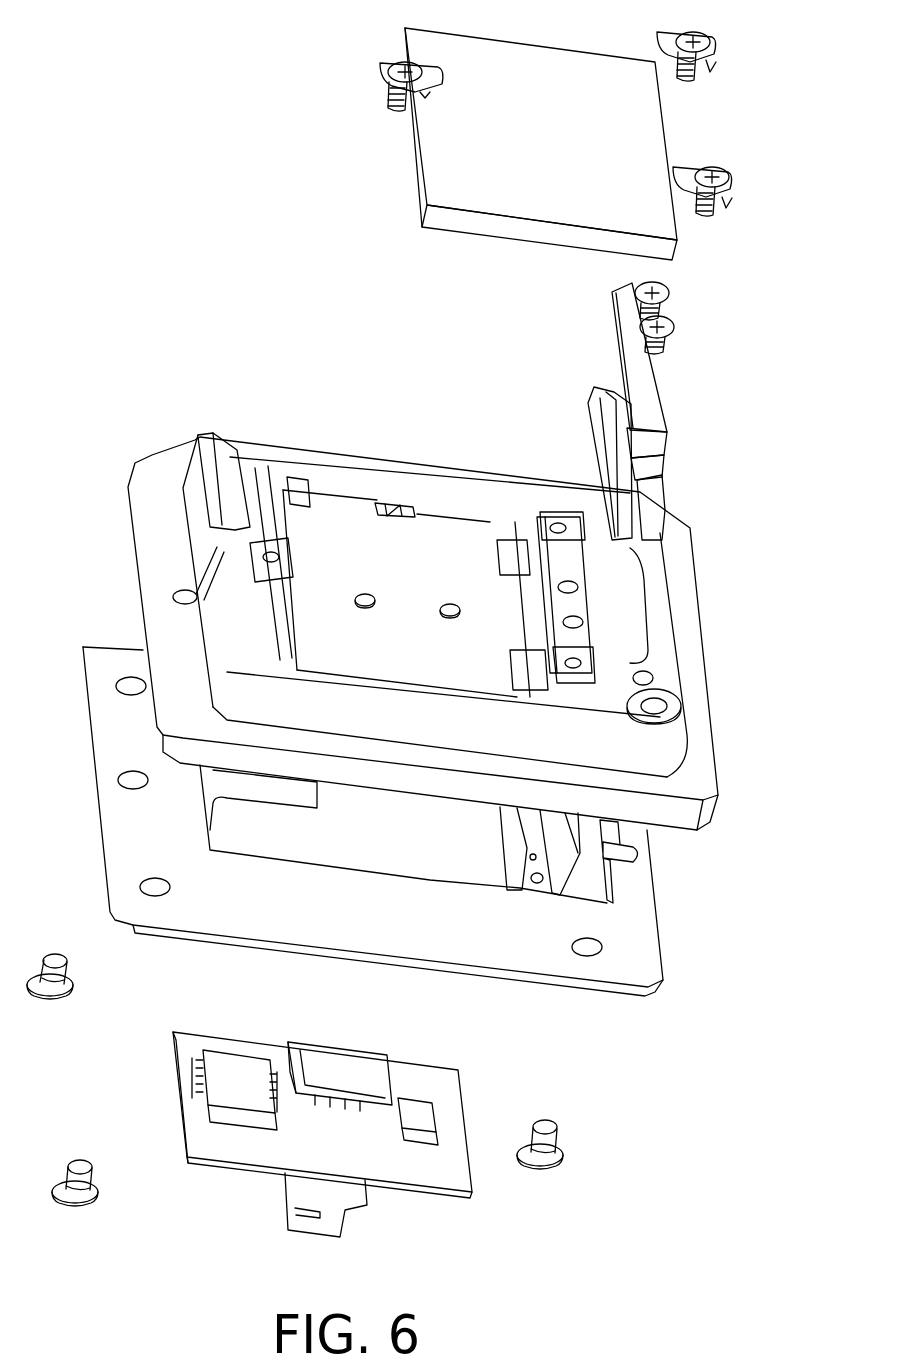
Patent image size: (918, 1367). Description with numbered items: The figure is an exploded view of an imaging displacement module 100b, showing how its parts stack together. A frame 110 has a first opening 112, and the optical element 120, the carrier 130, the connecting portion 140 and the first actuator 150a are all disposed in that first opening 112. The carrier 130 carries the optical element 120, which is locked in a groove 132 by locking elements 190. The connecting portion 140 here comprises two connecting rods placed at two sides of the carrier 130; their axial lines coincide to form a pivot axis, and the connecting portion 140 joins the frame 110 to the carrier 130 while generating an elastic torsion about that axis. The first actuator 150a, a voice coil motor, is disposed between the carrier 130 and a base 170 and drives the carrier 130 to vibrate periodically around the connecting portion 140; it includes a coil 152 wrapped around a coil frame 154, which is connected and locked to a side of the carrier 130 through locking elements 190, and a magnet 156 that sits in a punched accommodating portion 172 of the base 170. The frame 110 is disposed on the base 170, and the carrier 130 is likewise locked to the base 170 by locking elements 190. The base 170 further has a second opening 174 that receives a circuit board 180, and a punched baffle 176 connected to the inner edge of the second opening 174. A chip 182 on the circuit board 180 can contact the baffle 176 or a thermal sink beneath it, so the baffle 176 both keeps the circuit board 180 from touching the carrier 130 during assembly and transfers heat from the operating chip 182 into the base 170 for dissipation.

The imaging displacement module 100b is at (792, 1275).
The frame 110 is at (423, 625).
The first opening 112 is at (248, 510).
The optical element 120 is at (455, 165).
The carrier 130 is at (548, 510).
The groove 132 is at (455, 545).
The connecting portion 140 is at (398, 500).
The first actuator 150a is at (717, 411).
The coil 152 is at (640, 487).
The coil frame 154 is at (668, 437).
The magnet 156 is at (674, 463).
The base 170 is at (630, 958).
The accommodating portion 172 is at (556, 900).
The second opening 174 is at (420, 852).
The baffle 176 is at (277, 802).
The circuit board 180 is at (322, 1146).
The chip 182 is at (237, 1117).
The locking elements 190 is at (706, 42).